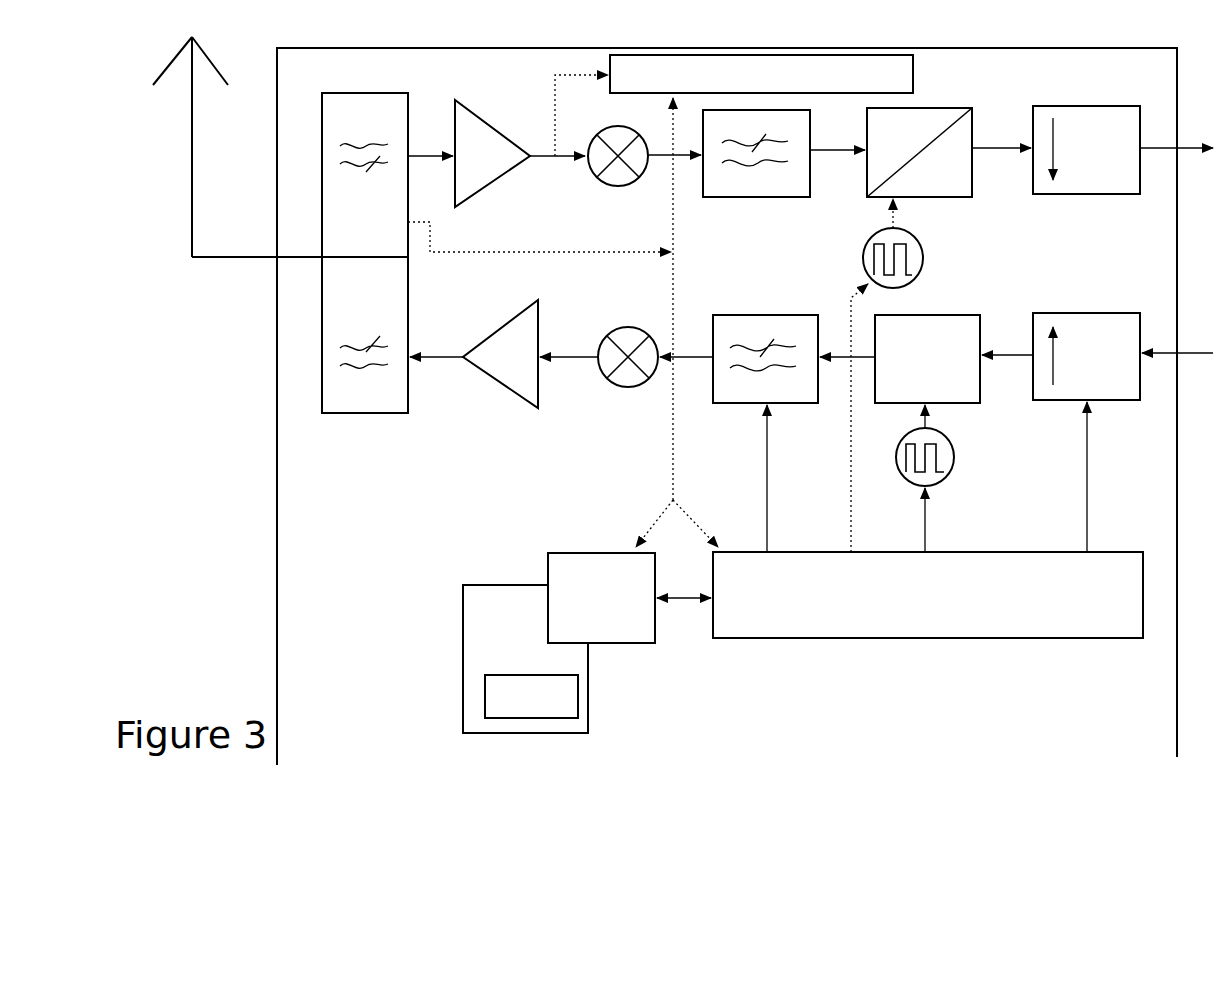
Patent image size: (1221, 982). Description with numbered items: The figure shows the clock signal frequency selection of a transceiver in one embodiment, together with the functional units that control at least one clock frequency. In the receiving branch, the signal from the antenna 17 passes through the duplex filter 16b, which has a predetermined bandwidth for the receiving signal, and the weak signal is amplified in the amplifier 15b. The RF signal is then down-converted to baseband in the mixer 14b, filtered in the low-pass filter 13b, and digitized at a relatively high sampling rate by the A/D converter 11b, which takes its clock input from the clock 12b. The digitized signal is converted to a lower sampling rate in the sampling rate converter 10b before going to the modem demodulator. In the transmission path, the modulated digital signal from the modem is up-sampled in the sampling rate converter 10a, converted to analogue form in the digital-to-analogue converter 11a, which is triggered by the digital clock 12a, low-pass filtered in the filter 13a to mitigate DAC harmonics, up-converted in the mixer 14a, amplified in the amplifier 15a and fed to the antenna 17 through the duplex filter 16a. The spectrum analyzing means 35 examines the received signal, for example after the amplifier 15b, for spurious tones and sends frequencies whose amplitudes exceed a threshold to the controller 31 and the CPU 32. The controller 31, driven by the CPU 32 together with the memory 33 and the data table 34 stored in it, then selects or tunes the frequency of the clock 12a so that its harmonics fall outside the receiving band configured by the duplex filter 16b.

The antenna 17 is at (194, 172).
The duplex filter 16b is at (356, 93).
The duplex filter 16a is at (370, 413).
The amplifier 15b is at (478, 190).
The amplifier 15a is at (503, 384).
The mixer 14b is at (618, 186).
The mixer 14a is at (626, 387).
The low-pass filter 13b is at (757, 197).
The low-pass filter 13a is at (722, 403).
The A/D converter 11b is at (952, 197).
The digital-to-analogue converter 11a is at (968, 403).
The sampling rate converter 10b is at (1097, 194).
The sampling rate converter 10a is at (1100, 400).
The clock 12b is at (920, 276).
The digital clock 12a is at (950, 476).
The spectrum analyzing means 35 is at (913, 78).
The controller 31 is at (1003, 638).
The central processing unit 32 is at (636, 643).
The memory 33 is at (463, 643).
The data table 34 is at (485, 692).